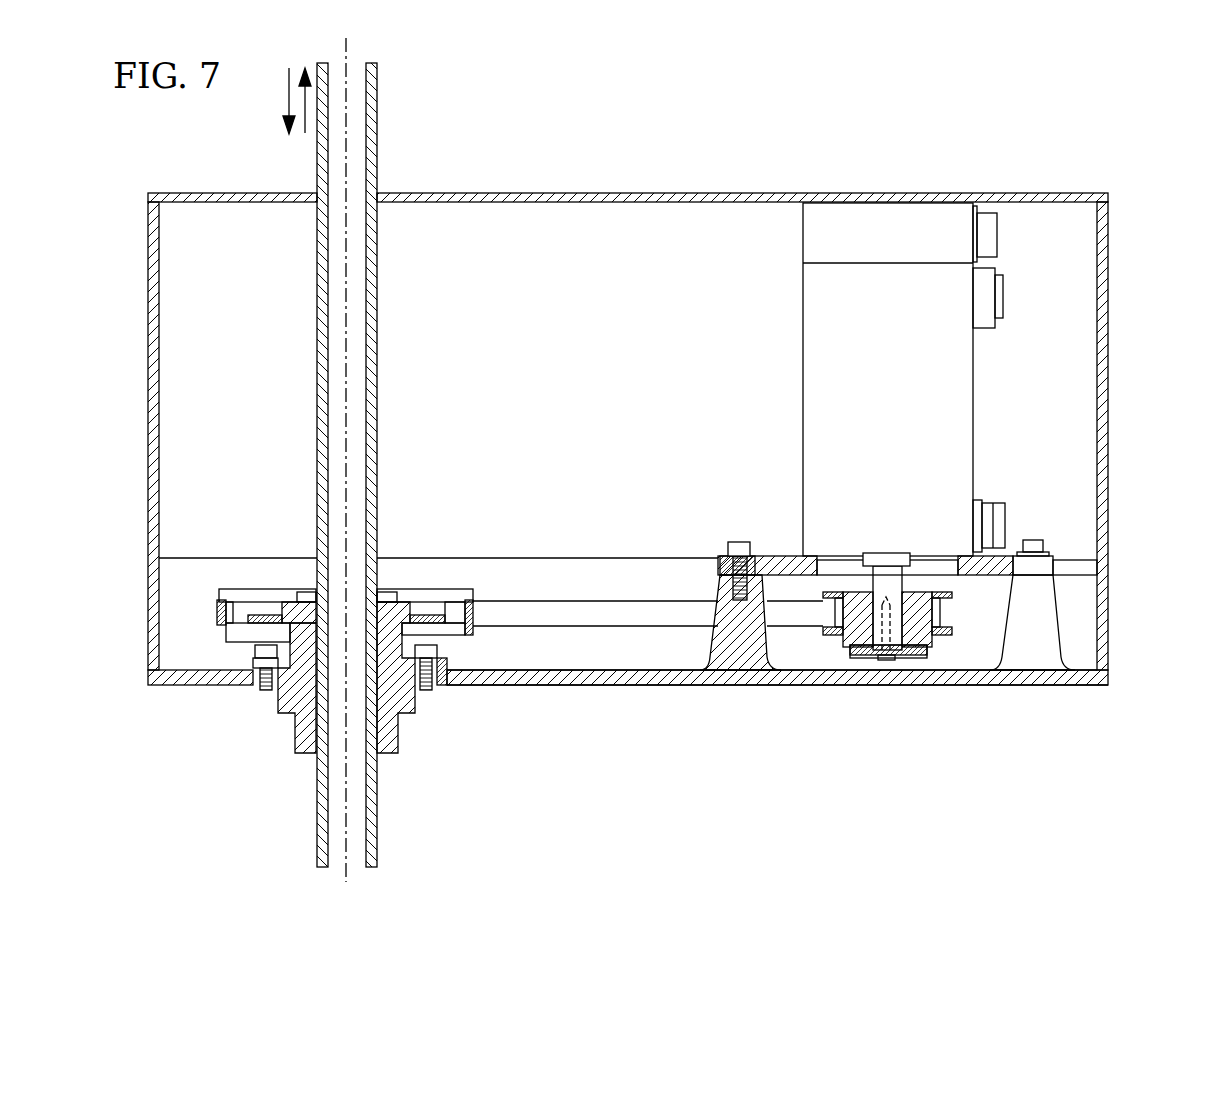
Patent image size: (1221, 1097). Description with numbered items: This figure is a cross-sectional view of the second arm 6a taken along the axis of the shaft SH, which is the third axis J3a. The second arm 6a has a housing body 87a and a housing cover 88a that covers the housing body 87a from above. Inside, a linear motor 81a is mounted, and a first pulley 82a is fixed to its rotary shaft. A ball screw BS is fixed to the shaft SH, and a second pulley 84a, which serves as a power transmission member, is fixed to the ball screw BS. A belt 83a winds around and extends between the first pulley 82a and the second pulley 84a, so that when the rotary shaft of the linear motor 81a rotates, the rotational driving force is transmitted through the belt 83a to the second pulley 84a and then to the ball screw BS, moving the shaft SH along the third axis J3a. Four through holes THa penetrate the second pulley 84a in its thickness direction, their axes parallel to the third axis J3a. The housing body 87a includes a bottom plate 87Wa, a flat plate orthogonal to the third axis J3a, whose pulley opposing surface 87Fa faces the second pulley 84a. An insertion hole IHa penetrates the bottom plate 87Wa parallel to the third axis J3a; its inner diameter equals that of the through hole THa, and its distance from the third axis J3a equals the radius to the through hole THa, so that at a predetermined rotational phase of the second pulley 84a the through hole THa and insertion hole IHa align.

The second arm 6a is at (1002, 138).
The third axis J3a is at (347, 443).
The shaft SH is at (378, 100).
The housing cover 88a is at (633, 190).
The housing body 87a is at (1108, 610).
The pulley opposing surface 87Fa is at (504, 656).
The bottom plate 87Wa is at (597, 686).
The linear motor 81a is at (803, 233).
The first pulley 82a is at (845, 642).
The belt 83a is at (665, 627).
The second pulley 84a is at (222, 643).
The ball screw BS is at (287, 716).
The insertion hole IHa is at (450, 691).
The through hole THa is at (457, 598).